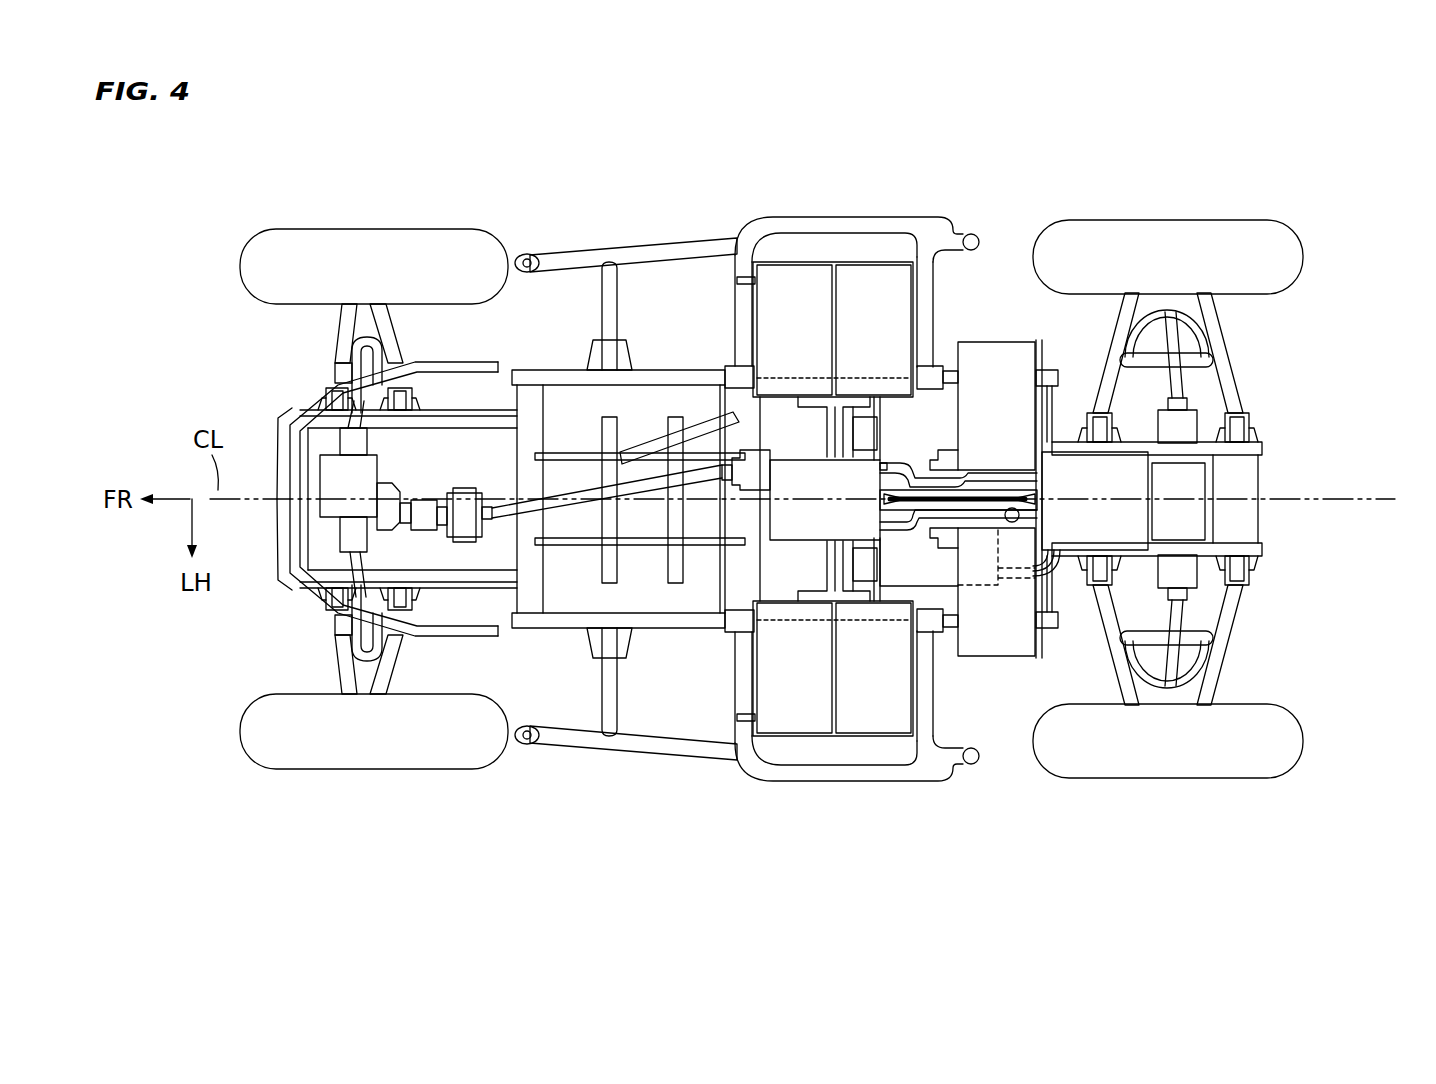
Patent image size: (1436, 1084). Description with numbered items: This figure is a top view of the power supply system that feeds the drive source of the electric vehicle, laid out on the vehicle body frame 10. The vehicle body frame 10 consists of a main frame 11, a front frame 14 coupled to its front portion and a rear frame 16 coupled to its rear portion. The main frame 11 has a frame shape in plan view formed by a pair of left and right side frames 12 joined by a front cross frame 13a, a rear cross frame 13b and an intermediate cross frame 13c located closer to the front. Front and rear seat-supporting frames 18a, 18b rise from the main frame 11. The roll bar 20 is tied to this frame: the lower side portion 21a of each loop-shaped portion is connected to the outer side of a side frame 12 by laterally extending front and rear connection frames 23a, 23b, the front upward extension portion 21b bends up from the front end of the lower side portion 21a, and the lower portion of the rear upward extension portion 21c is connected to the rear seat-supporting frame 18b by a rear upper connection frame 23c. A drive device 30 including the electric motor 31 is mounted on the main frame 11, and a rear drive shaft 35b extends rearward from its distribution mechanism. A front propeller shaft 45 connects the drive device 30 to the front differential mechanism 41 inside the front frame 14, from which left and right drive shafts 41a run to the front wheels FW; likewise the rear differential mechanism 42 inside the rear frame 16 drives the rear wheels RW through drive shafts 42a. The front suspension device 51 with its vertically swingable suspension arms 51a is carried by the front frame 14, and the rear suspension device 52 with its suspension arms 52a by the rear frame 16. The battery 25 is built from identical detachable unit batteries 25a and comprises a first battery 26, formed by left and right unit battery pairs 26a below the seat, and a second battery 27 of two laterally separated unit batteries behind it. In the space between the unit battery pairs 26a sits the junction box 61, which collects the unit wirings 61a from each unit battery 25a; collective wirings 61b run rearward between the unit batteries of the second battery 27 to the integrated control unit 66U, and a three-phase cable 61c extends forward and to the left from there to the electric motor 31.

The vehicle body frame 10 is at (795, 421).
The main frame 11 is at (795, 436).
The side frames 12 is at (672, 378).
The front cross frame 13a is at (535, 398).
The rear cross frame 13b is at (1043, 393).
The intermediate cross frame 13c is at (727, 402).
The front frame 14 is at (282, 408).
The rear frame 16 is at (1274, 446).
The front seat-supporting frame 18a is at (735, 375).
The rear seat-supporting frame 18b is at (930, 373).
The roll bar 20 is at (750, 492).
The lower side portion 21a is at (782, 217).
The front upward extension portion 21b is at (523, 257).
The rear upward extension portion 21c is at (975, 236).
The front connection frame 23a is at (607, 300).
The rear connection frame 23b is at (735, 293).
The rear upper connection frame 23c is at (920, 250).
The battery 25 is at (970, 504).
The unit battery 25a is at (810, 285).
The first battery 26 is at (928, 504).
The unit battery pair 26a is at (930, 512).
The second battery 27 is at (1027, 333).
The drive device 30 is at (991, 657).
The electric motor 31 is at (953, 597).
The rear drive shaft 35b is at (902, 463).
The front differential mechanism 41 is at (370, 472).
The drive shaft 41a is at (362, 355).
The rear differential mechanism 42 is at (1180, 483).
The drive shaft 42a is at (1183, 385).
The front propeller shaft 45 is at (587, 493).
The front suspension device 51 is at (389, 507).
The suspension arm 51a is at (378, 330).
The rear suspension device 52 is at (1238, 494).
The suspension arm 52a is at (1210, 340).
The junction box 61 is at (780, 522).
The unit wirings 61a is at (838, 436).
The collective wirings 61b is at (930, 507).
The three-phase cable 61c is at (1068, 576).
The integrated control unit 66U is at (1068, 465).
The front wheel FW is at (290, 242).
The rear wheel RW is at (1262, 225).